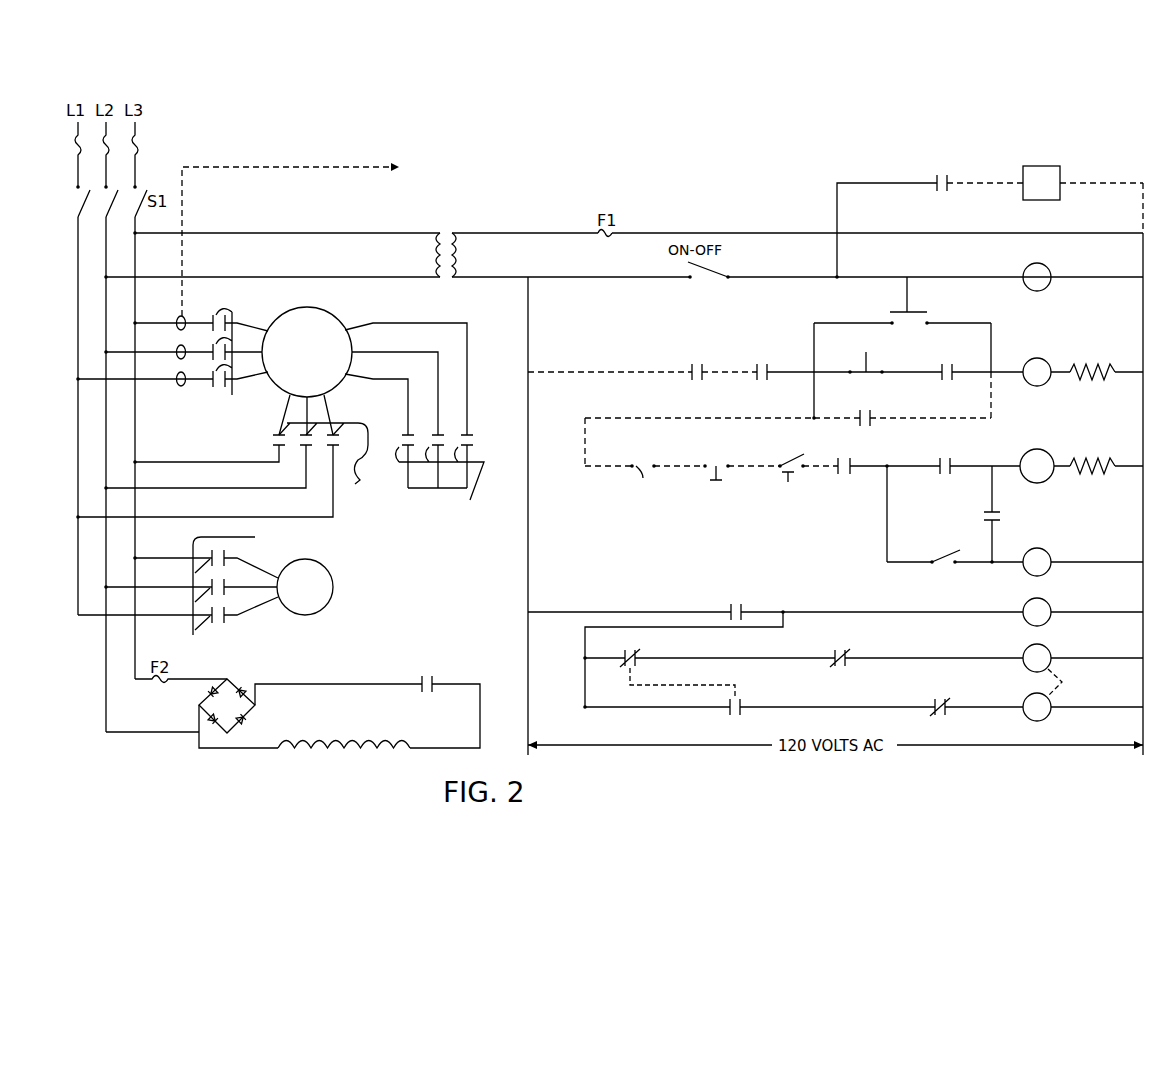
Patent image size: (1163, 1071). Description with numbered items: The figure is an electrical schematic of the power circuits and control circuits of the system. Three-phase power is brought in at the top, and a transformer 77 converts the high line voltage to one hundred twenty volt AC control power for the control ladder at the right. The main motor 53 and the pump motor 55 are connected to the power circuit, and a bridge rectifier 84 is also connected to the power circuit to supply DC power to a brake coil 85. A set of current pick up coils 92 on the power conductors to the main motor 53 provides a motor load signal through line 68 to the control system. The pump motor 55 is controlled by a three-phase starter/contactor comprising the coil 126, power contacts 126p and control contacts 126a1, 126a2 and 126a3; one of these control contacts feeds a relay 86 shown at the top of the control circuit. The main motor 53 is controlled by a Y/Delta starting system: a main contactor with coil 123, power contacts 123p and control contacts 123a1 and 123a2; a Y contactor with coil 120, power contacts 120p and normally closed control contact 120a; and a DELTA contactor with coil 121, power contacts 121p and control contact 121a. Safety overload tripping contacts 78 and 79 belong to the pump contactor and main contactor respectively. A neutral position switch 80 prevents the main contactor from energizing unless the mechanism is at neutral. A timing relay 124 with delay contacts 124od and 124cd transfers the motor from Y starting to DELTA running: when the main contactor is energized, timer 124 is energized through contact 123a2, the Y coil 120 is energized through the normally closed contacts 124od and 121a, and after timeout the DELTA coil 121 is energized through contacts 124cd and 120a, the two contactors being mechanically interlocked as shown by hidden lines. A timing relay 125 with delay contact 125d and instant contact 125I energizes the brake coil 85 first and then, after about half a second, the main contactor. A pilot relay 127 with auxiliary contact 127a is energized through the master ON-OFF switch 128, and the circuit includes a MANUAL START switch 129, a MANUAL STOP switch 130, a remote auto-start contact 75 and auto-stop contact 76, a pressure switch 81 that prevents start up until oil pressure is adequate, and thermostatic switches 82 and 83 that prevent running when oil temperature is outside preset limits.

The main motor 53 is at (340, 312).
The pump motor 55 is at (333, 565).
The line 68 is at (258, 167).
The auto-start contact 75 is at (867, 409).
The auto-stop contact 76 is at (699, 362).
The transformer 77 is at (455, 233).
The safety overload tripping contact 78 is at (1090, 362).
The safety overload tripping contact 79 is at (1090, 458).
The neutral position switch 80 is at (948, 592).
The pressure switch 81 is at (795, 484).
The thermostatic switch 82 is at (716, 500).
The thermostatic switch 83 is at (642, 478).
The bridge rectifier 84 is at (231, 676).
The brake coil 85 is at (407, 740).
The relay 86 is at (1033, 172).
The current pick up coils 92 is at (181, 386).
The Y contactor coil 120 is at (1030, 648).
The normally closed control contact 120a is at (935, 713).
The power contacts 120p is at (442, 481).
The DELTA contactor coil 121 is at (1032, 718).
The control contact 121a is at (838, 649).
The power contacts 121p is at (330, 463).
The main contactor coil 123 is at (1024, 461).
The control contact 123a1 is at (947, 459).
The control contact 123a2 is at (731, 600).
The power contacts 123p is at (232, 395).
The timing relay 124 is at (1051, 607).
The delay contact 124od is at (622, 655).
The delay contact 124cd is at (738, 698).
The timing relay 125 is at (1051, 558).
The delay contact 125d is at (984, 524).
The instant contact 125I is at (424, 676).
The coil 126 is at (1026, 365).
The control contact 126a1 is at (942, 374).
The control contact 126a2 is at (838, 462).
The control contact 126a3 is at (940, 190).
The power contacts 126p is at (246, 581).
The pilot relay 127 is at (1028, 268).
The auxiliary contact 127a is at (766, 362).
The master ON-OFF switch 128 is at (693, 258).
The MANUAL START switch 129 is at (906, 288).
The MANUAL STOP switch 130 is at (858, 328).